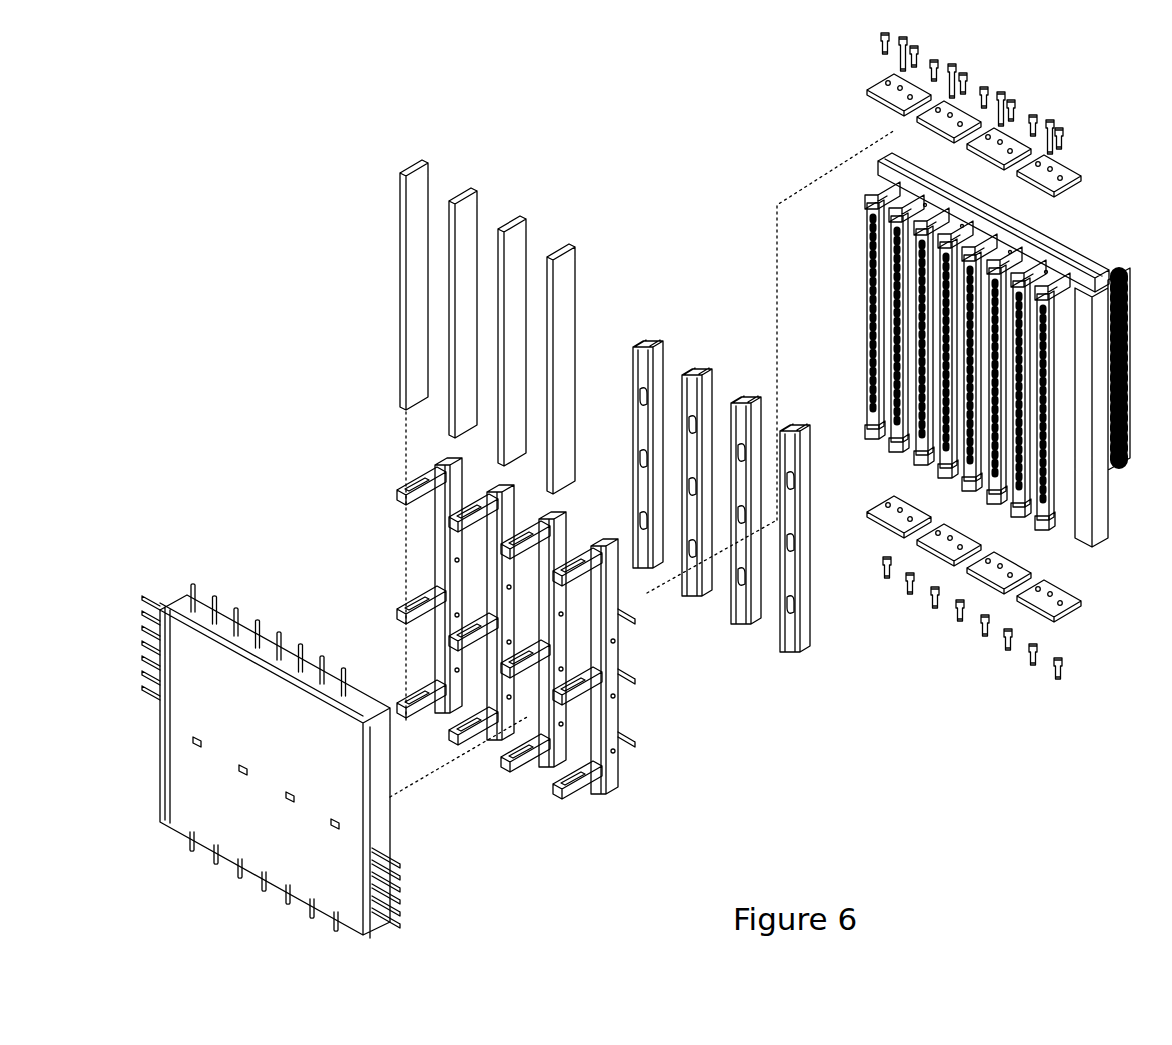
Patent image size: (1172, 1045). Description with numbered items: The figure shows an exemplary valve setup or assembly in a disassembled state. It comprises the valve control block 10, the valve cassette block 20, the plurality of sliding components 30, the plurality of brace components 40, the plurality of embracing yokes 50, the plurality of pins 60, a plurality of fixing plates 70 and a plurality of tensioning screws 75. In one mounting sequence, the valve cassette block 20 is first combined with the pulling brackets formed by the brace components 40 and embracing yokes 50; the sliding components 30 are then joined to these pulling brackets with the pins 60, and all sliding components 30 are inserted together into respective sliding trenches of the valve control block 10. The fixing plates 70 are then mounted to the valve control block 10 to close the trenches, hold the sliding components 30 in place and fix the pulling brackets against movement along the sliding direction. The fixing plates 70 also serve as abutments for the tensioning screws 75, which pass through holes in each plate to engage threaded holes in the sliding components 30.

The valve control block 10 is at (1123, 248).
The valve cassette block 20 is at (228, 558).
The sliding components 30 is at (671, 333).
The brace components 40 is at (604, 818).
The embracing yokes 50 is at (478, 153).
The pins 60 is at (637, 622).
The fixing plates 70 is at (870, 83).
The tensioning screws 75 is at (1053, 116).